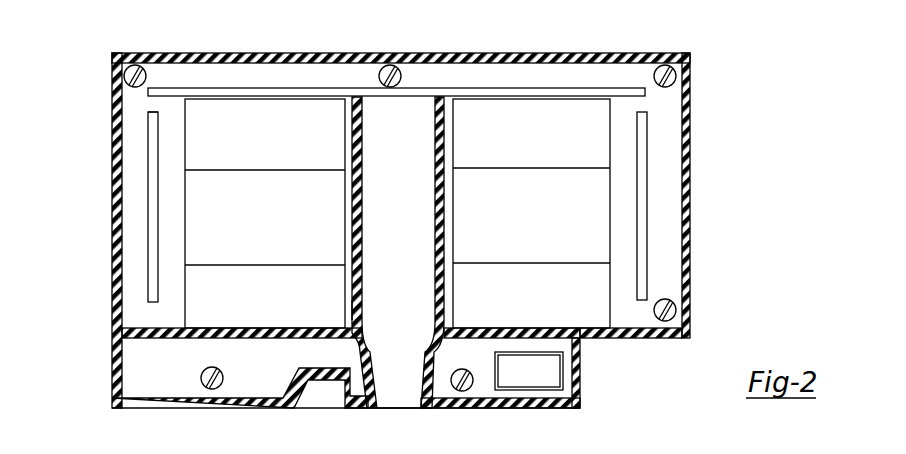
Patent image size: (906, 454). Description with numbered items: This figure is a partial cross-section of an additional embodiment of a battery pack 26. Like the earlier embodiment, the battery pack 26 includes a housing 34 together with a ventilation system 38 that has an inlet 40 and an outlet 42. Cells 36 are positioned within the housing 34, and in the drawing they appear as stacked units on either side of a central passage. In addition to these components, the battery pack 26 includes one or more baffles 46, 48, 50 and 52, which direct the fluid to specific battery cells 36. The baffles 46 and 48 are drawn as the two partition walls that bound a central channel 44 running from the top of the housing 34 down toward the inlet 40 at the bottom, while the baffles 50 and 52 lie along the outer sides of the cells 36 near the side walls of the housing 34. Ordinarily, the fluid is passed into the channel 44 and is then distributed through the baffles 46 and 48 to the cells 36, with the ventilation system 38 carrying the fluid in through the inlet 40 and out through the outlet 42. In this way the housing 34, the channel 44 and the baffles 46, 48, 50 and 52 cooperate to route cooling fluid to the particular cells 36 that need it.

The battery pack 26 is at (677, 346).
The housing 34 is at (628, 341).
The cells 36 is at (264, 141).
The ventilation system 38 is at (100, 290).
The inlet 40 is at (370, 393).
The outlet 42 is at (117, 122).
The channel 44 is at (362, 312).
The baffle 46 is at (440, 100).
The baffle 48 is at (357, 100).
The baffle 50 is at (643, 128).
The baffle 52 is at (150, 124).